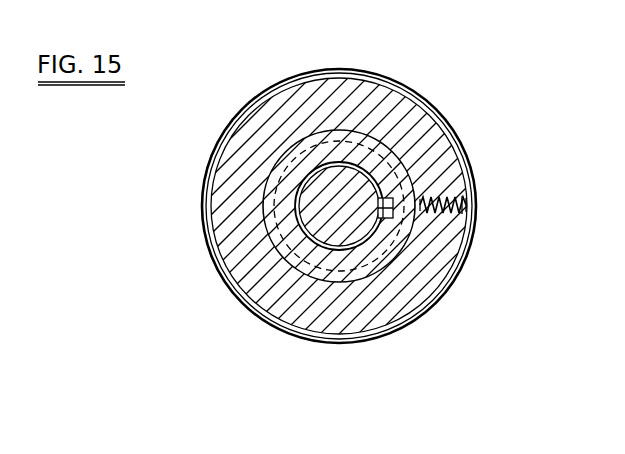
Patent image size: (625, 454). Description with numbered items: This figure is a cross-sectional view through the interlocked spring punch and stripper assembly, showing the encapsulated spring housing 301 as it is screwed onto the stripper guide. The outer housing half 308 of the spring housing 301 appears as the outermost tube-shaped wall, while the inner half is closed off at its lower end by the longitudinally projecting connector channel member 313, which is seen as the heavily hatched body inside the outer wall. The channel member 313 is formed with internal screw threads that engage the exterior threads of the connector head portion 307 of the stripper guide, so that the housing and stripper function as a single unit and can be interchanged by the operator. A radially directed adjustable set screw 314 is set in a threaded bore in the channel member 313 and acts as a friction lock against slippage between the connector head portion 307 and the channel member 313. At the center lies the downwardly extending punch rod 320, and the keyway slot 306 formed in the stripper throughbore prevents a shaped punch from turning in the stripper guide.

The spring housing 301 is at (196, 158).
The keyway slot 306 is at (381, 198).
The connector head portion 307 is at (392, 238).
The outer housing half 308 is at (351, 71).
The connector channel member 313 is at (258, 128).
The set screw 314 is at (464, 203).
The punch rod 320 is at (282, 227).